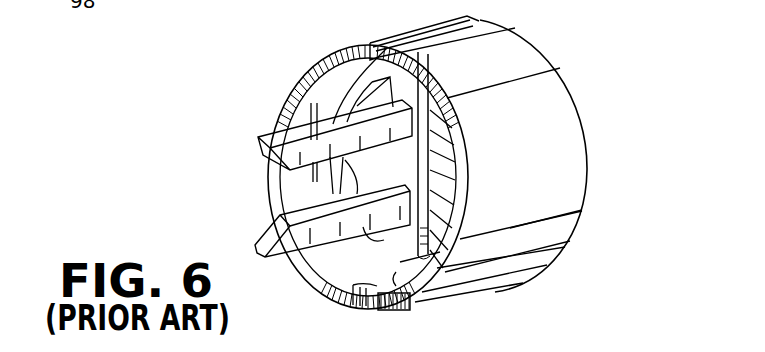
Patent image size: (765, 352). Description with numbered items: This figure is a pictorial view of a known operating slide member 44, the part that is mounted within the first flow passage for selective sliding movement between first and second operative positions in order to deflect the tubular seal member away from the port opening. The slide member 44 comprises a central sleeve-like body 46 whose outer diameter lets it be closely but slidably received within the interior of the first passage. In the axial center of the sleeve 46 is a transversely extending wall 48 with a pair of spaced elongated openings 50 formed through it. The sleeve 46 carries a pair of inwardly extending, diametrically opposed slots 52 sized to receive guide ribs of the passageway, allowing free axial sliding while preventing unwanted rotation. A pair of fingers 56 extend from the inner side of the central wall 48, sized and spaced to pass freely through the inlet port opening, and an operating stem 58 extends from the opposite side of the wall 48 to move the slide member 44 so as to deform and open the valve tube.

The slide member 44 is at (282, 61).
The central sleeve-like body 46 is at (465, 157).
The transversely extending wall 48 is at (411, 252).
The elongated openings 50 is at (368, 169).
The slots 52 is at (404, 34).
The fingers 56 is at (266, 128).
The operating stem 58 is at (441, 165).